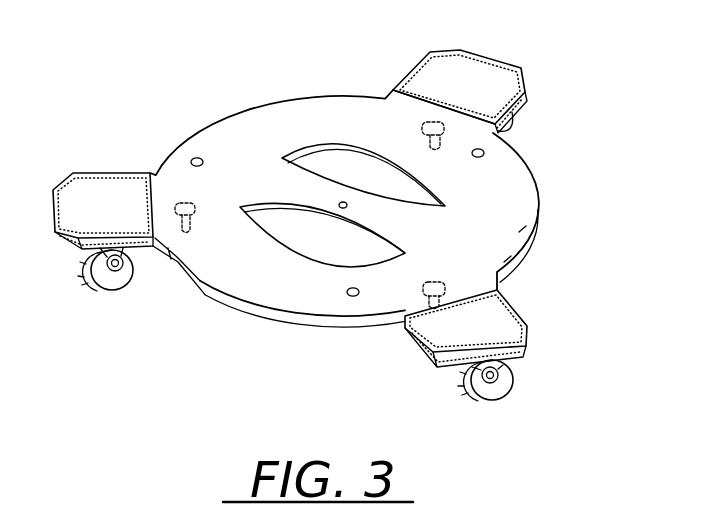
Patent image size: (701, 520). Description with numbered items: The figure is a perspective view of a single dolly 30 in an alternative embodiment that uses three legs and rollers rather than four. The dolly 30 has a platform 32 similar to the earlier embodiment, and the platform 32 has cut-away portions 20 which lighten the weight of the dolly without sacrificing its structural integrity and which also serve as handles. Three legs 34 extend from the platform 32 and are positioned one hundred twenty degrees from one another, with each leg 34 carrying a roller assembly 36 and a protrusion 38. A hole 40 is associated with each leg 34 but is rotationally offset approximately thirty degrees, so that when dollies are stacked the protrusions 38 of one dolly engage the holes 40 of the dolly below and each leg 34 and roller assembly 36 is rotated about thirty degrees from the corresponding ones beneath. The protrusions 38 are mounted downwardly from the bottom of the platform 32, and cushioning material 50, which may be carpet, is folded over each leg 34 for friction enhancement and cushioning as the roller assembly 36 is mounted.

The cut-away portions 20 is at (310, 152).
The dolly 30 is at (527, 164).
The platform 32 is at (540, 218).
The legs 34 is at (530, 348).
The roller assembly 36 is at (93, 296).
The protrusion 38 is at (188, 236).
The hole 40 is at (357, 298).
The cushioning material 50 is at (508, 66).